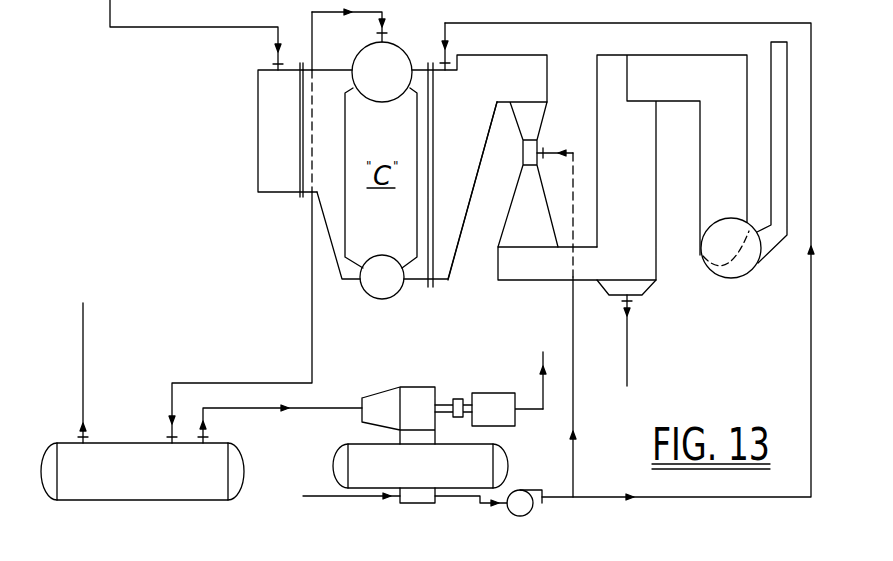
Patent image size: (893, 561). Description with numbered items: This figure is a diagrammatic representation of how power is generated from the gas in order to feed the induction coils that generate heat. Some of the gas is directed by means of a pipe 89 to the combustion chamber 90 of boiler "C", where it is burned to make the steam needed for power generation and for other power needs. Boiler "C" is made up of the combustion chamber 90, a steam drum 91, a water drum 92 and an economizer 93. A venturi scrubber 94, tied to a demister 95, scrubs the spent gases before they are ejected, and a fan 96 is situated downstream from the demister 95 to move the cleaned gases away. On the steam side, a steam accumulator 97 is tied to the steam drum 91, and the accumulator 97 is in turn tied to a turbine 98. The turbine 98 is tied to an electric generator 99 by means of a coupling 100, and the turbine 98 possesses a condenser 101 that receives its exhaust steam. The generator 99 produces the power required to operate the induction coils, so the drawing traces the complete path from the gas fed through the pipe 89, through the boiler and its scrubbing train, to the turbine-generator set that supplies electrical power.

The pipe 89 is at (210, 25).
The combustion chamber 90 is at (260, 131).
The steam drum 91 is at (399, 50).
The water drum 92 is at (391, 302).
The economizer 93 is at (470, 168).
The venturi section 94 is at (545, 110).
The demister 95 is at (642, 198).
The fan 96 is at (737, 278).
The steam accumulator 97 is at (150, 497).
The turbine 98 is at (405, 371).
The electric generator 99 is at (509, 393).
The coupling 100 is at (456, 398).
The condenser 101 is at (357, 444).